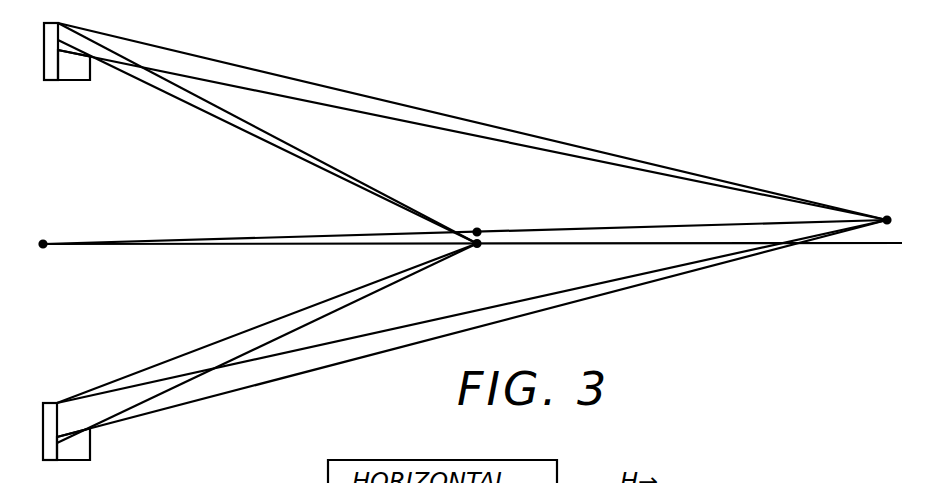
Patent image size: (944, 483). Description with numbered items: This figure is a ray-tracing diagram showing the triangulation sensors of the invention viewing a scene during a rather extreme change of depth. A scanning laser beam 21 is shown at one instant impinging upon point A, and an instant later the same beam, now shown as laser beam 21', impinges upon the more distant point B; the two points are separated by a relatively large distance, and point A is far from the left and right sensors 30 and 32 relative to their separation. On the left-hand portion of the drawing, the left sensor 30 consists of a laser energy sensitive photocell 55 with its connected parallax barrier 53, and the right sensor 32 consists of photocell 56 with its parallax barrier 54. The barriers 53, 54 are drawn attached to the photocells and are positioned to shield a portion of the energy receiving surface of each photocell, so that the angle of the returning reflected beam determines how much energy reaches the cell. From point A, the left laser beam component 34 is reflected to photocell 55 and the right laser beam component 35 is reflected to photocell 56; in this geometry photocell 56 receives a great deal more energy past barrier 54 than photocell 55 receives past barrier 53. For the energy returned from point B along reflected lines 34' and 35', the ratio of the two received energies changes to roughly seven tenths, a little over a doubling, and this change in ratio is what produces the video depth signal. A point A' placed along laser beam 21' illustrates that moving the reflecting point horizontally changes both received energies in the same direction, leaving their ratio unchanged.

The laser beam 21 is at (471, 262).
The laser beam 21' is at (465, 219).
The left sensor 30 is at (91, 93).
The parallax barrier 53 is at (92, 61).
The photocell 55 is at (46, 66).
The left laser beam component 34 is at (267, 133).
The reflected line 34' is at (472, 121).
The right sensor 32 is at (78, 400).
The parallax barrier 54 is at (70, 460).
The photocell 56 is at (43, 417).
The right laser beam component 35 is at (267, 344).
The reflected line 35' is at (472, 328).